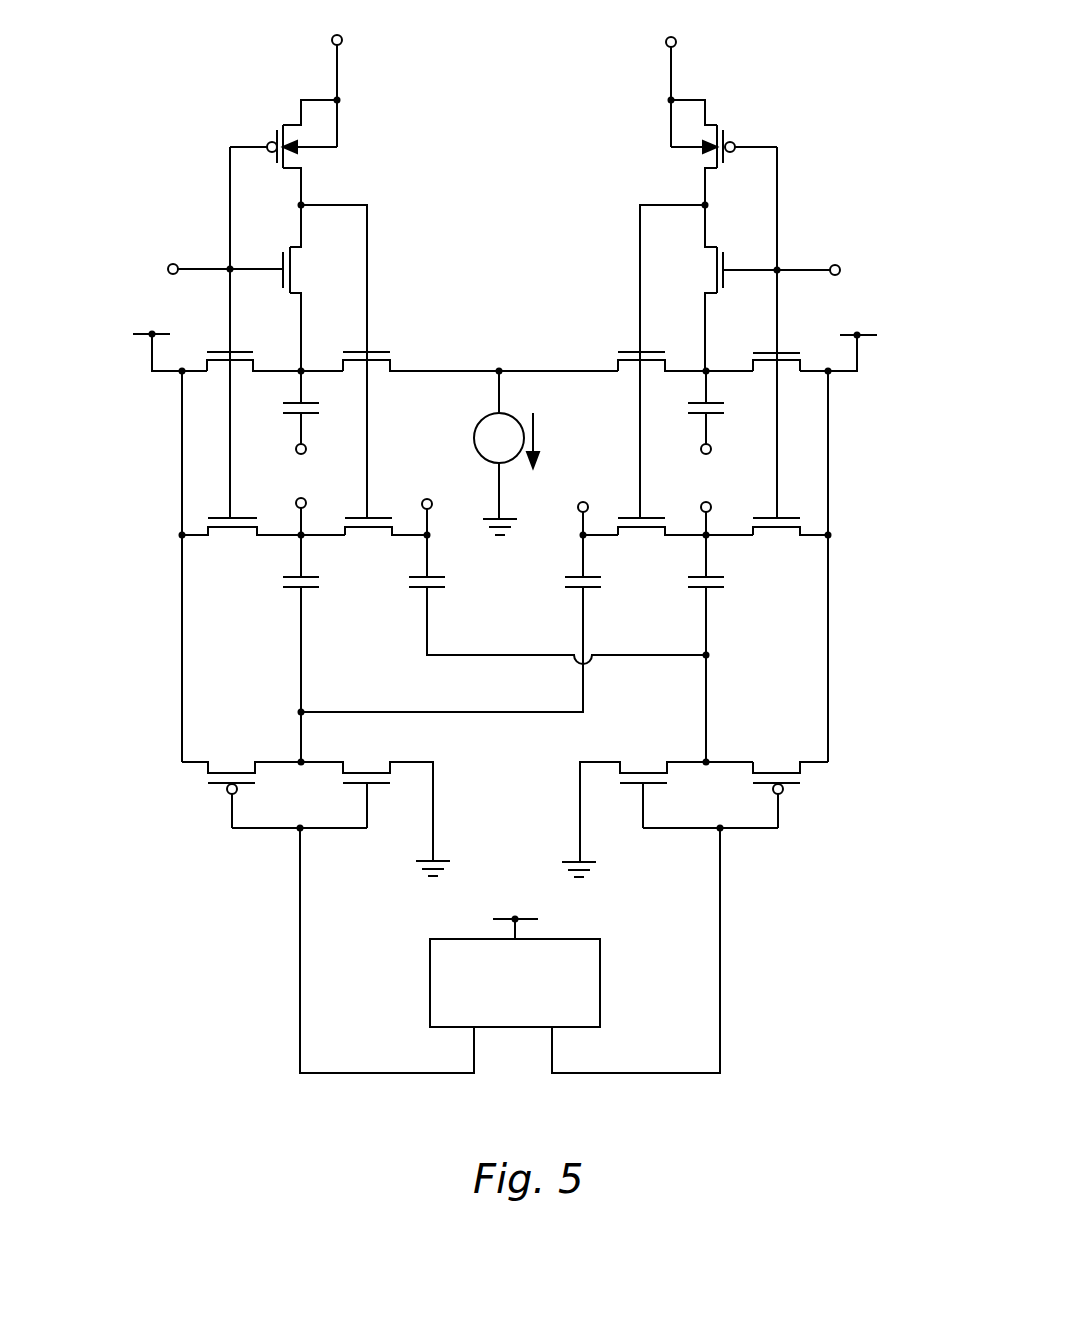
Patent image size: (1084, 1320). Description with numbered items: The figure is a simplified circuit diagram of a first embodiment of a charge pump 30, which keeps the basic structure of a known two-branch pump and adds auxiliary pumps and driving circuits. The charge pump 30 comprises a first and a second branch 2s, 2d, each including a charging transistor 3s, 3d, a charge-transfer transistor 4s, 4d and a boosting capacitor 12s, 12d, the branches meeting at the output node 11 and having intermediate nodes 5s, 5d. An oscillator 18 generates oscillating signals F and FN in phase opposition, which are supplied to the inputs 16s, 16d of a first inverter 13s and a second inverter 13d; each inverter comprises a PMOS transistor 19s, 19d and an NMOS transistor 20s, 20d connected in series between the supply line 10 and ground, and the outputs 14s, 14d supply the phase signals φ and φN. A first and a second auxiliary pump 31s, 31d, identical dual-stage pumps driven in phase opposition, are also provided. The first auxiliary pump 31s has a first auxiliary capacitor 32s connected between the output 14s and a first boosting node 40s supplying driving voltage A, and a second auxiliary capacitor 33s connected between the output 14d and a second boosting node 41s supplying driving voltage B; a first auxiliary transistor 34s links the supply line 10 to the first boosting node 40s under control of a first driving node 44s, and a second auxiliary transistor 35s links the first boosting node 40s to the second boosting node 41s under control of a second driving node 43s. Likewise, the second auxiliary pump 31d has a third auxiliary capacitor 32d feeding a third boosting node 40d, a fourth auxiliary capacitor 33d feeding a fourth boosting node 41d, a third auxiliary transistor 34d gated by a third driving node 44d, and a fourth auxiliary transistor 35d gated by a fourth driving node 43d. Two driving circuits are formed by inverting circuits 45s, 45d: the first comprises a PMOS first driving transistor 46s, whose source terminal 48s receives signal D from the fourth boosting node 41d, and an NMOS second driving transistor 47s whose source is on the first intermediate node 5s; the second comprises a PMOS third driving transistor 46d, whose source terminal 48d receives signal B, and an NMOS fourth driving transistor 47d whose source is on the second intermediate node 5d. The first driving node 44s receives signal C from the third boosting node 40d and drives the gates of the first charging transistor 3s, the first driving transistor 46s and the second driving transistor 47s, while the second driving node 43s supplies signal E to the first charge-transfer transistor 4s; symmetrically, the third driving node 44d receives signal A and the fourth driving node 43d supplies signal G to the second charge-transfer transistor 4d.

The first branch 2s is at (190, 326).
The second branch 2d is at (830, 322).
The first charging transistor 3s is at (217, 374).
The second charging transistor 3d is at (792, 368).
The first charge-transfer transistor 4s is at (378, 374).
The second charge-transfer transistor 4d is at (628, 370).
The first intermediate node 5s is at (300, 370).
The second intermediate node 5d is at (703, 370).
The supply line 10 is at (136, 336).
The output node VOUT with load current source 11 is at (498, 370).
The first boosting capacitor 12s is at (318, 408).
The second boosting capacitor 12d is at (692, 409).
The first inverter 13s is at (212, 812).
The second inverter 13d is at (822, 788).
The output of first inverter 14s is at (300, 758).
The output of second inverter 14d is at (704, 760).
The input of first inverter 16s is at (299, 830).
The input of second inverter 16d is at (722, 830).
The oscillator 18 is at (587, 965).
The PMOS transistor of first inverter 19s is at (228, 771).
The PMOS transistor of second inverter 19d is at (767, 775).
The NMOS transistor of first inverter 20s is at (365, 770).
The NMOS transistor of second inverter 20d is at (641, 772).
The charge pump 30 is at (847, 118).
The first auxiliary pump 31s is at (213, 619).
The second auxiliary pump 31d is at (773, 570).
The first auxiliary capacitor 32s is at (282, 580).
The third auxiliary capacitor 32d is at (727, 580).
The second auxiliary capacitor 33s is at (407, 583).
The fourth auxiliary capacitor 33d is at (602, 582).
The first auxiliary transistor 34s is at (222, 533).
The third auxiliary transistor 34d is at (782, 532).
The second auxiliary transistor 35s is at (363, 528).
The fourth auxiliary transistor 35d is at (617, 533).
The first boosting node 40s is at (300, 534).
The third boosting node 40d is at (705, 537).
The second boosting node 41s is at (431, 534).
The fourth boosting node 41d is at (582, 536).
The second driving node 43s is at (303, 204).
The fourth driving node 43d is at (703, 204).
The first driving node 44s is at (174, 262).
The third driving node 44d is at (797, 268).
The first inverting circuit 45s is at (380, 133).
The second inverting circuit 45d is at (620, 133).
The first driving transistor 46s is at (296, 125).
The third driving transistor 46d is at (712, 125).
The second driving transistor 47s is at (297, 269).
The fourth driving transistor 47d is at (708, 282).
The source terminal of first driving transistor 48s is at (332, 41).
The source terminal of third driving transistor 48d is at (680, 42).